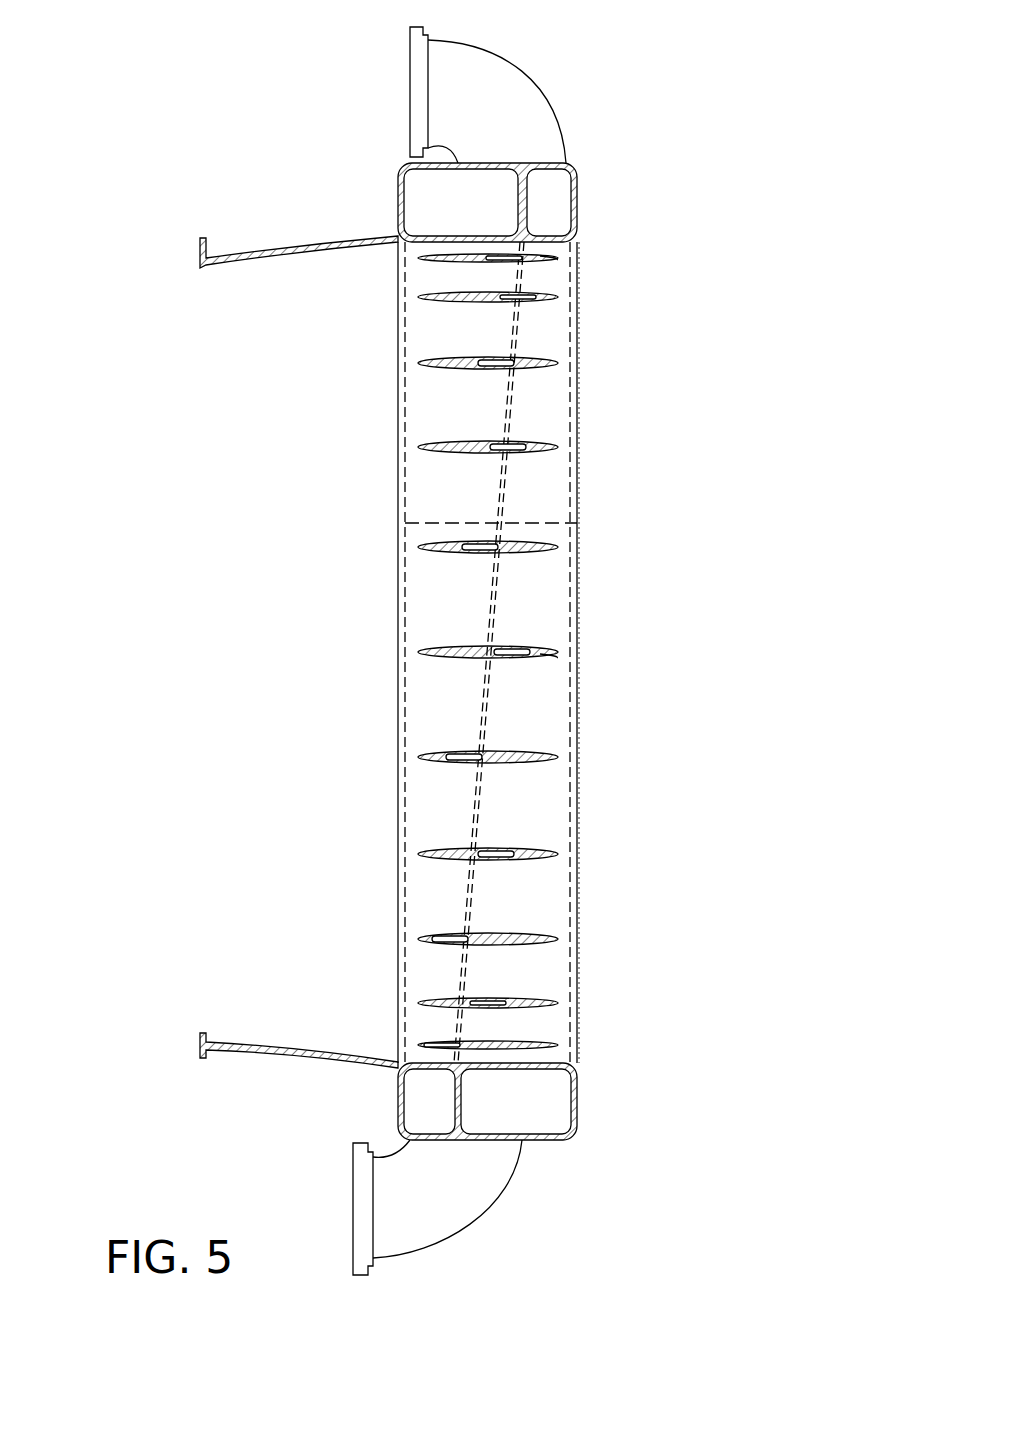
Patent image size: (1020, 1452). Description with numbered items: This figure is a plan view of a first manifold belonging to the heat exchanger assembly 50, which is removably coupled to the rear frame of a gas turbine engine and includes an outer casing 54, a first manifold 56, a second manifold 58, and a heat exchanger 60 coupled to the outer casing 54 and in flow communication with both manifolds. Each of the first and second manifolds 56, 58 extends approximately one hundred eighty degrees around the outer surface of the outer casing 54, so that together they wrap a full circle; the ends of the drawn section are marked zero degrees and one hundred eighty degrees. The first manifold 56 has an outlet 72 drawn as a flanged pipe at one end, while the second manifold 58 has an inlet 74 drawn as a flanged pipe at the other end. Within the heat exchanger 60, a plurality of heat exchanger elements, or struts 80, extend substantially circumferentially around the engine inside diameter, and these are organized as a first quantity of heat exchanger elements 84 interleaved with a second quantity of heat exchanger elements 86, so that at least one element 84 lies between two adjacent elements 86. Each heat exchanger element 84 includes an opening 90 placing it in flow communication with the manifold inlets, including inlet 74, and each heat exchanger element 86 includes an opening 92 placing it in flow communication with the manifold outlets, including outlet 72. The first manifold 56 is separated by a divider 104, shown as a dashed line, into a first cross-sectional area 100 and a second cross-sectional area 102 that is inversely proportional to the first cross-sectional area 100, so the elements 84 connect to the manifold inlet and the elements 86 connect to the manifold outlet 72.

The heat exchanger assembly 50 is at (624, 70).
The outer casing 54 is at (263, 248).
The first manifold 56 is at (555, 195).
The second manifold 58 is at (440, 200).
The heat exchanger 60 is at (581, 418).
The outlet 72 is at (462, 1215).
The inlet 74 is at (503, 92).
The struts 80 is at (546, 258).
The heat exchanger elements 84 is at (418, 256).
The heat exchanger elements 86 is at (425, 300).
The opening 90 is at (497, 263).
The opening 92 is at (535, 300).
The first cross-sectional area 100 is at (427, 606).
The second cross-sectional area 102 is at (511, 606).
The divider 104 is at (580, 523).